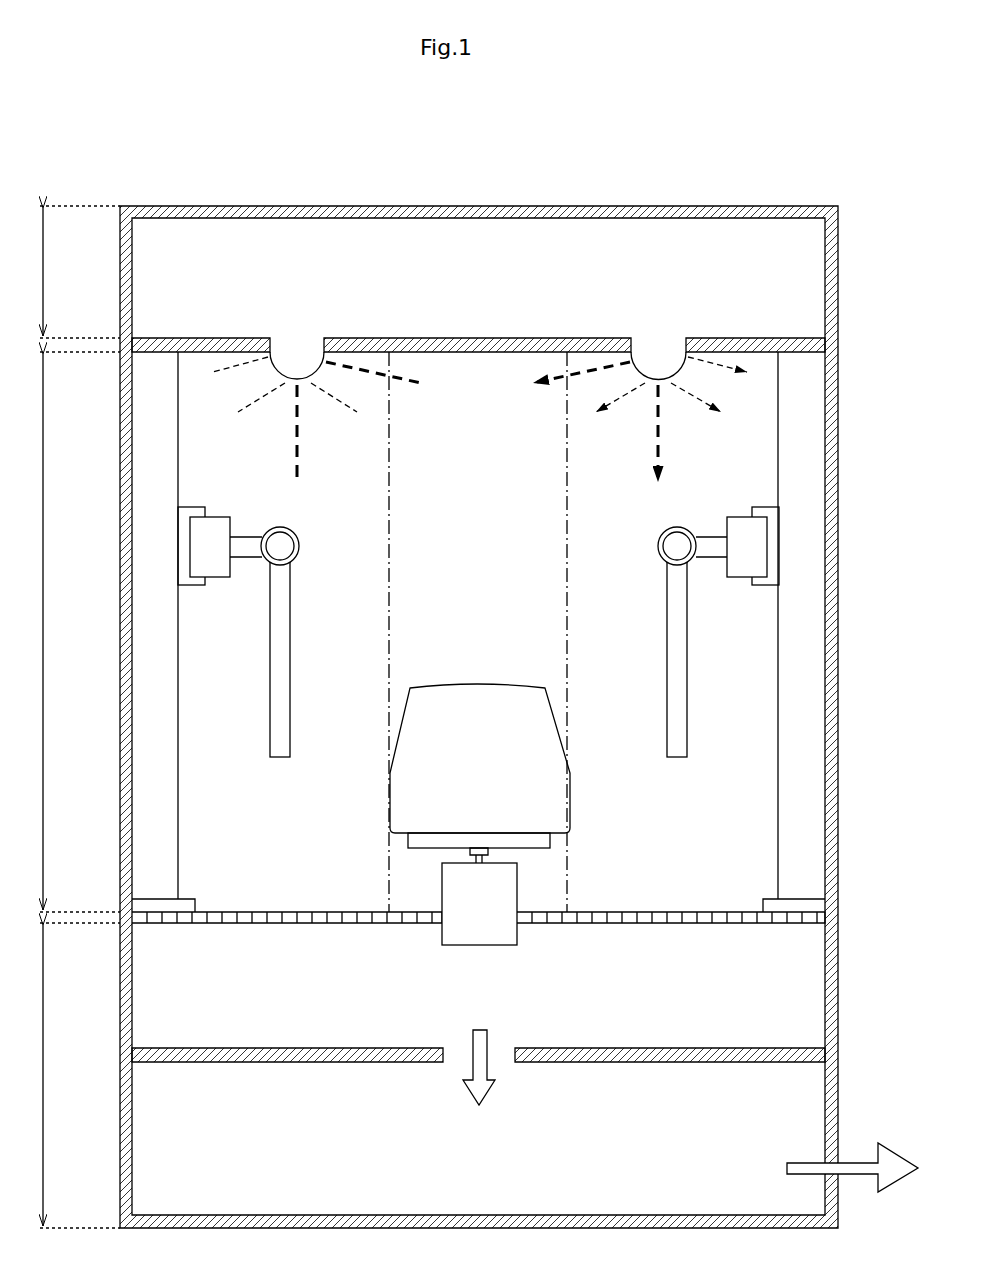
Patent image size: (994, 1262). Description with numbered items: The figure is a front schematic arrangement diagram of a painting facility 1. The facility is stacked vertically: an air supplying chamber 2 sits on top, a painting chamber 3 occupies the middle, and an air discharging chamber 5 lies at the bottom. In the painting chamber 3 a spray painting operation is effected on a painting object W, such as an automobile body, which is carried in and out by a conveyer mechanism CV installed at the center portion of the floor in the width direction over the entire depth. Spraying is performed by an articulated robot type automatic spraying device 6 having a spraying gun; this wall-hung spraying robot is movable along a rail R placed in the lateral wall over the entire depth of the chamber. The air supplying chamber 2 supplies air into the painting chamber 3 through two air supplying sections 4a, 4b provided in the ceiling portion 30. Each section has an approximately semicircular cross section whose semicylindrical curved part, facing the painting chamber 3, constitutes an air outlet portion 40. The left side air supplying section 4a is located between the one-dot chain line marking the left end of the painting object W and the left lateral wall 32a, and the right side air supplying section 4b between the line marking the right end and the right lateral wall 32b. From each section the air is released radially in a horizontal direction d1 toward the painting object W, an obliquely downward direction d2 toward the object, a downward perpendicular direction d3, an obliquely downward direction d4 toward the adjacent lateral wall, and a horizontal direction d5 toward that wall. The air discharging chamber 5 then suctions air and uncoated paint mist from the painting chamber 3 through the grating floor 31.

The painting facility 1 is at (838, 127).
The air supplying chamber 2 is at (71, 272).
The painting chamber 3 is at (71, 632).
The air discharging chamber 5 is at (71, 1075).
The ceiling portion 30 is at (480, 338).
The grating floor 31 is at (601, 912).
The left lateral wall 32a is at (176, 806).
The right lateral wall 32b is at (780, 825).
The left side air supplying section 4a is at (294, 372).
The right side air supplying section 4b is at (661, 372).
The air outlet portion 40 is at (670, 380).
The automatic spraying device 6 is at (285, 597).
The rail R is at (195, 586).
The painting object W is at (475, 693).
The conveyer mechanism CV is at (458, 938).
The horizontal direction d1 is at (567, 350).
The obliquely downward direction d2 is at (628, 390).
The downward perpendicular direction d3 is at (666, 440).
The obliquely downward direction d4 is at (698, 382).
The horizontal direction d5 is at (724, 338).